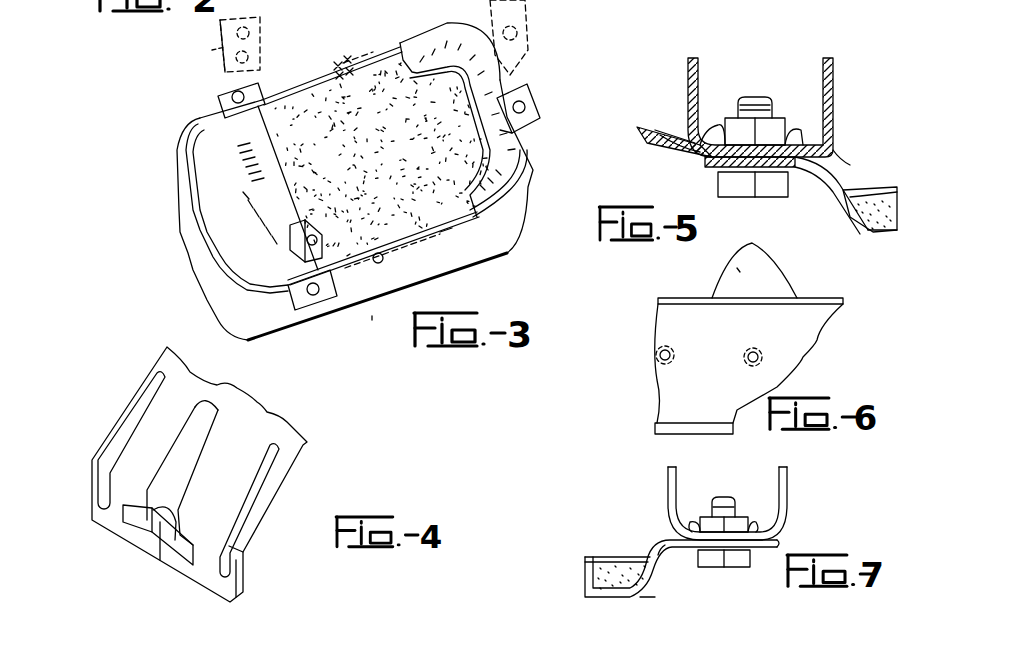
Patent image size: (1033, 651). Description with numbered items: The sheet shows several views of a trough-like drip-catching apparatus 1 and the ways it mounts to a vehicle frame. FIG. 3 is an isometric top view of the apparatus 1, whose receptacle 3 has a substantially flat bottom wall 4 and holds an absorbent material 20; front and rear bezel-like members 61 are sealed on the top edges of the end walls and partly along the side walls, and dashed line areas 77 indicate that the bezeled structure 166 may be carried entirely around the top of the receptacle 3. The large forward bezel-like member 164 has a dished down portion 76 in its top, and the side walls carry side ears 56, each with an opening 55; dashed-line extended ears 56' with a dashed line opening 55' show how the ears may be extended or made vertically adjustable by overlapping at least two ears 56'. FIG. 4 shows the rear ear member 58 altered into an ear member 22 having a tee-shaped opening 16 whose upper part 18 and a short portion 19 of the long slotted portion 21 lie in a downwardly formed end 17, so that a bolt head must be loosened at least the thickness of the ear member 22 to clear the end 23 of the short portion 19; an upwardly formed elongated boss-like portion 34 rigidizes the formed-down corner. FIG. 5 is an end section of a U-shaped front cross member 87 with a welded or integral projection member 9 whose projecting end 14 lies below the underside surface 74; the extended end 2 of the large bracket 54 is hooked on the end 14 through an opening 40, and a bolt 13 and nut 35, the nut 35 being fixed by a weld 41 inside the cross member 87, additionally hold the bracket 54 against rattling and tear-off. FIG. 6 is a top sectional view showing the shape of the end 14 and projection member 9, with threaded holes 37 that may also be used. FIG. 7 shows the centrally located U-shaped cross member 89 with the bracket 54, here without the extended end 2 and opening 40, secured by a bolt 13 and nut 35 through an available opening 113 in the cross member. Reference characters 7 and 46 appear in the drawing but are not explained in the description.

In FIG. 5, the apparatus 1 is at (875, 238).
In FIG. 7, the apparatus 1 is at (655, 583).
In FIG. 5, the extended end 2 is at (665, 128).
In FIG. 3, the receptacle 3 is at (387, 77).
In FIG. 7, the receptacle 3 is at (633, 553).
In FIG. 3, the bottom wall 4 is at (372, 318).
In FIG. 3, the flap edge 7 is at (298, 100).
In FIG. 5, the projection member 9 is at (683, 147).
In FIG. 6, the projection member 9 is at (737, 270).
In FIG. 5, the bolt 13 is at (740, 197).
In FIG. 7, the bolt 13 is at (733, 567).
In FIG. 3, the projecting end 14 is at (215, 323).
In FIG. 5, the projecting end 14 is at (643, 138).
In FIG. 6, the projecting end 14 is at (770, 253).
In FIG. 4, the tee-shaped opening 16 is at (213, 407).
In FIG. 4, the downwardly formed end 17 is at (100, 518).
In FIG. 4, the upper part 18 is at (140, 522).
In FIG. 4, the short portion 19 is at (172, 532).
In FIG. 3, the material 20 is at (456, 241).
In FIG. 5, the material 20 is at (867, 193).
In FIG. 7, the material 20 is at (620, 557).
In FIG. 4, the long slotted portion 21 is at (218, 432).
In FIG. 4, the ear member 22 is at (270, 493).
In FIG. 4, the end 23 is at (152, 527).
In FIG. 4, the boss-like portion 34 is at (272, 460).
In FIG. 5, the nut 35 is at (777, 125).
In FIG. 7, the nut 35 is at (740, 507).
In FIG. 6, the threaded holes 37 is at (657, 353).
In FIG. 5, the opening 40 is at (727, 167).
In FIG. 5, the weld 41 is at (706, 128).
In FIG. 7, the weld 41 is at (690, 522).
In FIG. 3, the rail 46 is at (347, 70).
In FIG. 5, the large bracket 54 is at (818, 182).
In FIG. 7, the large bracket 54 is at (670, 533).
In FIG. 3, the opening 55 is at (365, 159).
In FIG. 3, the dashed line opening 55' is at (195, 53).
In FIG. 3, the side ear 56 is at (318, 175).
In FIG. 3, the extended ear 56' is at (398, 36).
In FIG. 3, the rear ear member 58 is at (535, 117).
In FIG. 3, the bezel-like member 61 is at (466, 30).
In FIG. 5, the underside surface 74 is at (843, 155).
In FIG. 3, the dished down portion 76 is at (260, 185).
In FIG. 3, the dashed line areas 77 is at (365, 63).
In FIG. 5, the front cross member 87 is at (836, 60).
In FIG. 6, the front cross member 87 is at (667, 320).
In FIG. 7, the cross member 89 is at (785, 493).
In FIG. 7, the opening 113 is at (748, 523).
In FIG. 3, the bezel-like member 164 is at (207, 125).
In FIG. 3, the bezeled structure 166 is at (298, 92).